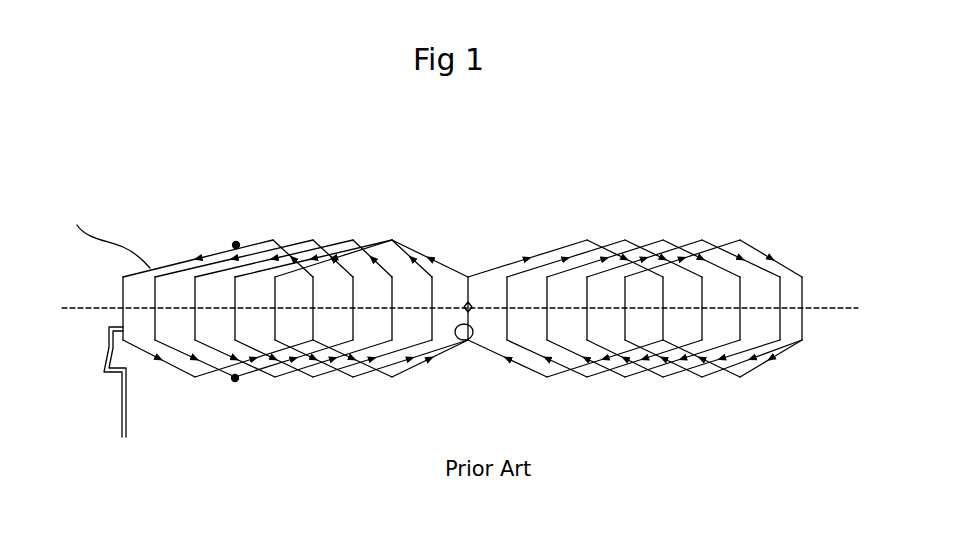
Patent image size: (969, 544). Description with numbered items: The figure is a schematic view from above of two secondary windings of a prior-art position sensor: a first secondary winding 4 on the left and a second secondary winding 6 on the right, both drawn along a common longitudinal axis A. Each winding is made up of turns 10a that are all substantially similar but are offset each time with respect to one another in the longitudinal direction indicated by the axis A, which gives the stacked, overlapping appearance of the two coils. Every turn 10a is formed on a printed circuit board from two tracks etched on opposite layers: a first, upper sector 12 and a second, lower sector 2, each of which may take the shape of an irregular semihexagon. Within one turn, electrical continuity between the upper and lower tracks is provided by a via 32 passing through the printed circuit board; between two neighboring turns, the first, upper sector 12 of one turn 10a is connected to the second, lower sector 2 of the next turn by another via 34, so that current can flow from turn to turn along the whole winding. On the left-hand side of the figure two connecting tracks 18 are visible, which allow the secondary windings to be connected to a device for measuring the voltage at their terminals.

The second, lower sector 2 is at (243, 245).
The first secondary winding 4 is at (307, 207).
The second secondary winding 6 is at (607, 207).
The turns 10a is at (205, 375).
The first, upper sector 12 is at (77, 225).
The connecting tracks 18 is at (121, 413).
The via 32 is at (236, 244).
The via 34 is at (235, 380).
The longitudinal axis A is at (830, 308).